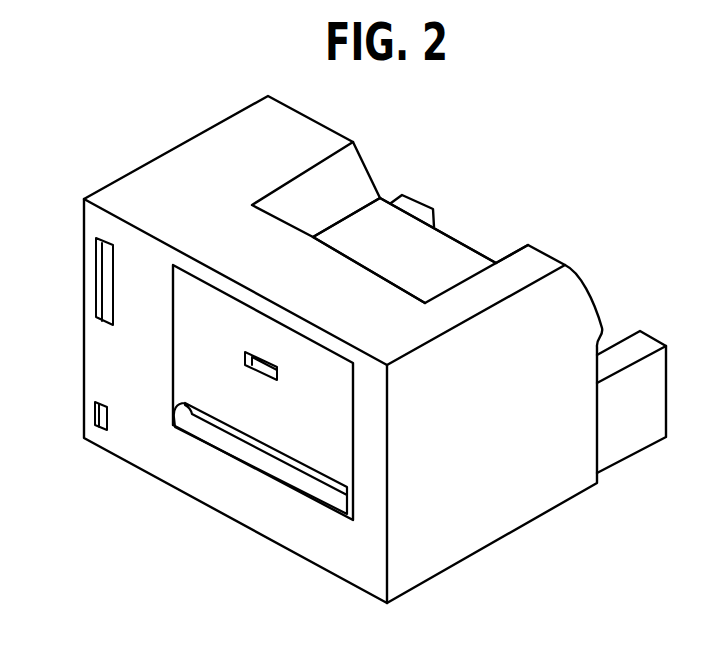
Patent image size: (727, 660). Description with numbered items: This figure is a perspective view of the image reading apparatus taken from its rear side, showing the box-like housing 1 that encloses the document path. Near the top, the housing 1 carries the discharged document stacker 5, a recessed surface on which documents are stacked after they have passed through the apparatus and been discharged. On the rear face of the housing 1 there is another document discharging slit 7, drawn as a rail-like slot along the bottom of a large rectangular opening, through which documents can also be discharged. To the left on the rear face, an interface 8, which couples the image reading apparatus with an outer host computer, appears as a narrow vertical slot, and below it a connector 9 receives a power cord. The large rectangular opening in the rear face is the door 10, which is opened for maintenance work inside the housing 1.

The housing 1 is at (175, 173).
The discharged document stacker 5 is at (422, 252).
The document discharging slit 7 is at (217, 450).
The interface 8 is at (107, 282).
The connector 9 is at (103, 413).
The door 10 is at (328, 419).